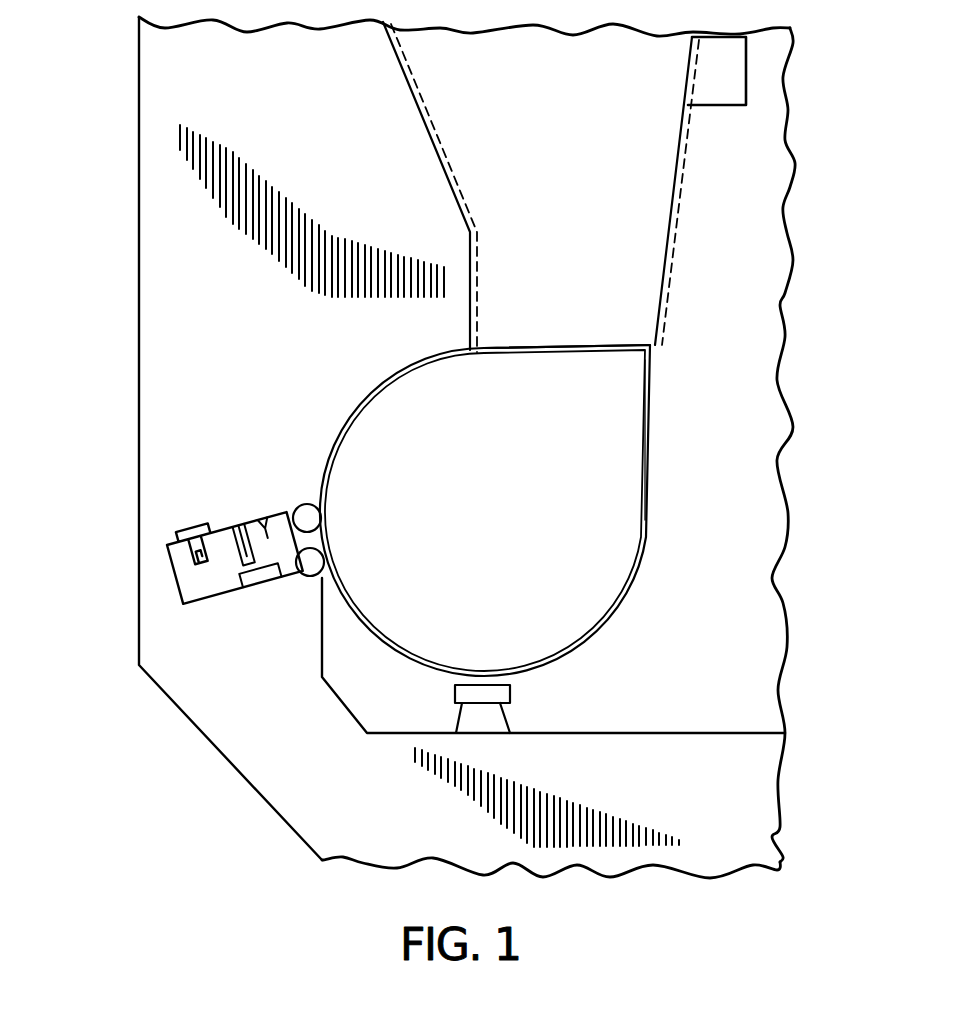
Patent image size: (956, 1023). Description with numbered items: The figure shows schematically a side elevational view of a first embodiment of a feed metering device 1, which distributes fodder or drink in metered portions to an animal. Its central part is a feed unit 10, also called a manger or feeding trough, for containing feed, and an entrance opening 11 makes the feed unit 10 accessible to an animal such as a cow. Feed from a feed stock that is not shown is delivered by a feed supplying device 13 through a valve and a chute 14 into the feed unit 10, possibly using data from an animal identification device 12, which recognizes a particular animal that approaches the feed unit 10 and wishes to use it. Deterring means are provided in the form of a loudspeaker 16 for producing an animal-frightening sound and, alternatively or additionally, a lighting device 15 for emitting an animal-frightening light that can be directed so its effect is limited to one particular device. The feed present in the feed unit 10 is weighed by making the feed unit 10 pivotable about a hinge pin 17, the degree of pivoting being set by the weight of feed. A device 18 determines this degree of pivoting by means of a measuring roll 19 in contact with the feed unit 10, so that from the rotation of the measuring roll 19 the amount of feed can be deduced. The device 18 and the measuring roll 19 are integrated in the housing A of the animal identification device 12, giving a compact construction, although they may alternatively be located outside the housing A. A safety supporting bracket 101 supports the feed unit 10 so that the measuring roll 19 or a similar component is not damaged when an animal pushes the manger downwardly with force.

The feed metering device 1 is at (665, 470).
The feed unit 10 is at (633, 598).
The entrance opening 11 is at (380, 388).
The animal identification device 12 is at (203, 607).
The feed supplying device 13 is at (723, 72).
The chute 14 is at (668, 246).
The lighting device 15 is at (240, 536).
The loudspeaker 16 is at (263, 522).
The hinge pin 17 is at (310, 507).
The device for determining the degree of pivoting 18 is at (262, 587).
The measuring roll 19 is at (330, 583).
The safety supporting bracket 101 is at (485, 717).
The housing A is at (178, 585).